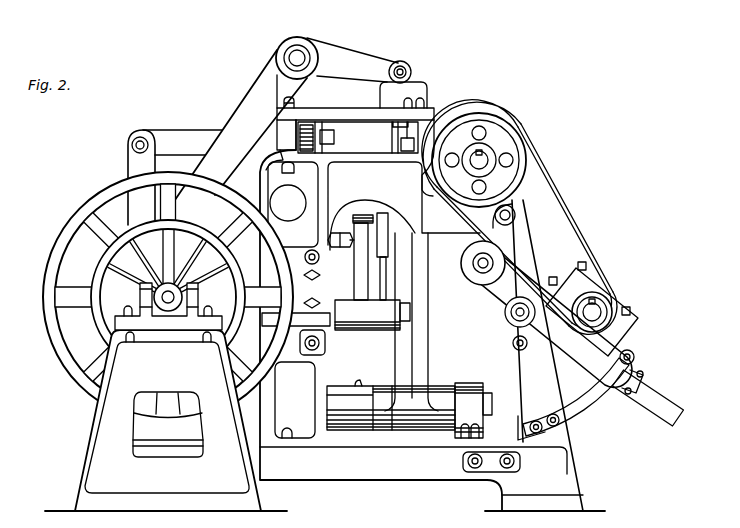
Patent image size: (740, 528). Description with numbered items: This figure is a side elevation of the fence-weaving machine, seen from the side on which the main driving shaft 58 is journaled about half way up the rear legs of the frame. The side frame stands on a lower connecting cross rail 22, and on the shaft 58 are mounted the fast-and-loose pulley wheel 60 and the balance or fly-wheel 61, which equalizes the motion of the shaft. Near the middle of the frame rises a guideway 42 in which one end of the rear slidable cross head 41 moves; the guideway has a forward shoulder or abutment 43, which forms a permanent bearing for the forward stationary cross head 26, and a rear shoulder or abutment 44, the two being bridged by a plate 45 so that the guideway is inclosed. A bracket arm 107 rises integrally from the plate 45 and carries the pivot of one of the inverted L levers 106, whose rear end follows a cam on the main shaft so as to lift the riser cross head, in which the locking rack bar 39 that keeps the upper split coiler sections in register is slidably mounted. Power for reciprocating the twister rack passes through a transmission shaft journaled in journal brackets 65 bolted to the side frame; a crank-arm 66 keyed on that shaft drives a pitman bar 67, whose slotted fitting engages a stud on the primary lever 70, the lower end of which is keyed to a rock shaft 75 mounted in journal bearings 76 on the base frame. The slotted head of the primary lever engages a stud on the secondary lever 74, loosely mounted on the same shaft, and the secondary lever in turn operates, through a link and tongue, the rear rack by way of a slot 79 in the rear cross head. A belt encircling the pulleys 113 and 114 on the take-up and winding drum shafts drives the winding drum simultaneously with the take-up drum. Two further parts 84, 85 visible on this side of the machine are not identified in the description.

The lower connecting cross rail 22 is at (442, 481).
The forward stationary cross head 26 is at (400, 144).
The locking rack bar 39 is at (418, 84).
The rear slidable cross head 41 is at (334, 140).
The guideway 42 is at (404, 90).
The forward shoulder or abutment 43 is at (440, 117).
The rear shoulder or abutment 44 is at (288, 128).
The plate 45 is at (355, 112).
The main driving shaft 58 is at (168, 312).
The fast-and-loose pulley wheel 60 is at (94, 323).
The balance or fly-wheel 61 is at (80, 222).
The journal bracket 65 is at (310, 284).
The crank-arm 66 is at (353, 216).
The pitman bar 67 is at (389, 222).
The primary lever 70 is at (405, 312).
The secondary lever 74 is at (428, 298).
The rock shaft 75 is at (343, 419).
The journal bearing 76 is at (478, 389).
The slot 79 is at (508, 238).
The cross bar 84 is at (172, 134).
The support block 85 is at (128, 160).
The inverted L lever 106 is at (257, 74).
The bracket arm 107 is at (310, 42).
The pulley 113 is at (500, 113).
The pulley 114 is at (610, 298).